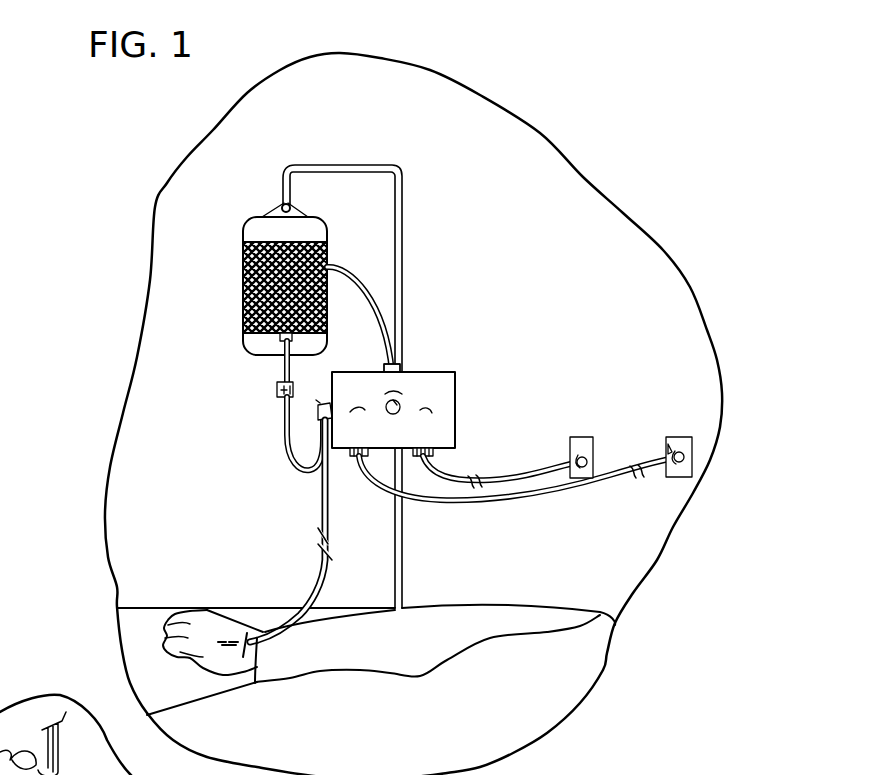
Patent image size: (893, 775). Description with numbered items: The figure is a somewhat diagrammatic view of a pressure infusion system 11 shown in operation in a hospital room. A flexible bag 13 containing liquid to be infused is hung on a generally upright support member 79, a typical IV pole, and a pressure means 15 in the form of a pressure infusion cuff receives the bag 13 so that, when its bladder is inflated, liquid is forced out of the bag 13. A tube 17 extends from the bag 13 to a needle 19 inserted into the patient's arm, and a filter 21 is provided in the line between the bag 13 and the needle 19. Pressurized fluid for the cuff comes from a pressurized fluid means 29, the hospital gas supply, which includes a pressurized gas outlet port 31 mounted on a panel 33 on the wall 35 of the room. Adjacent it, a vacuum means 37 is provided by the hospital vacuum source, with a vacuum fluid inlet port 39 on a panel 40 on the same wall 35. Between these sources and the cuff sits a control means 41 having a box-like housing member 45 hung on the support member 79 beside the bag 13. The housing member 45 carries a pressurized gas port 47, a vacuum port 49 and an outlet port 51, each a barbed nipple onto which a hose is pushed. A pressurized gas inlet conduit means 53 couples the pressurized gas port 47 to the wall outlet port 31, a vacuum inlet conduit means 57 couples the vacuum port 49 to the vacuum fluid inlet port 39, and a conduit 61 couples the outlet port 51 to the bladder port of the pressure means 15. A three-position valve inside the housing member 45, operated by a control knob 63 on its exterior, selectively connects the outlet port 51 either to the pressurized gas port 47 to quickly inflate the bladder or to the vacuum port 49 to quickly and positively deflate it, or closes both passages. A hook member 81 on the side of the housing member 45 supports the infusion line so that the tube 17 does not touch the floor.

The pressure infusion system 11 is at (115, 159).
The flexible bag 13 is at (238, 283).
The pressure means 15 is at (258, 342).
The tube 17 is at (287, 365).
The needle 19 is at (230, 636).
The filter 21 is at (277, 390).
The pressurized fluid means 29 is at (584, 420).
The pressurized gas outlet port 31 is at (571, 438).
The panel 33 is at (594, 440).
The wall 35 is at (530, 142).
The vacuum means 37 is at (666, 460).
The vacuum fluid inlet port 39 is at (667, 438).
The panel 40 is at (683, 470).
The control means 41 is at (429, 374).
The housing member 45 is at (455, 385).
The pressurized gas port 47 is at (435, 456).
The vacuum port 49 is at (354, 457).
The outlet port 51 is at (386, 365).
The pressurized gas inlet conduit means 53 is at (512, 480).
The vacuum inlet conduit means 57 is at (450, 500).
The conduit 61 is at (345, 268).
The control knob 63 is at (400, 404).
The support member 79 is at (402, 211).
The hook member 81 is at (320, 418).